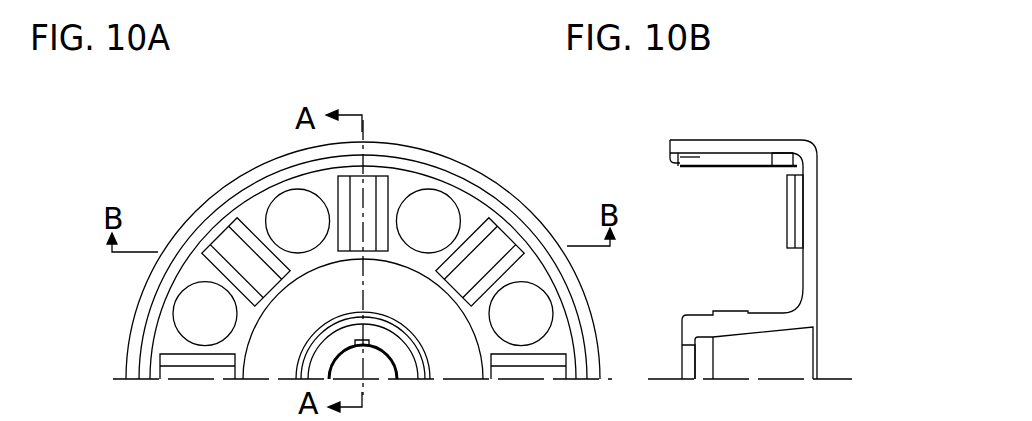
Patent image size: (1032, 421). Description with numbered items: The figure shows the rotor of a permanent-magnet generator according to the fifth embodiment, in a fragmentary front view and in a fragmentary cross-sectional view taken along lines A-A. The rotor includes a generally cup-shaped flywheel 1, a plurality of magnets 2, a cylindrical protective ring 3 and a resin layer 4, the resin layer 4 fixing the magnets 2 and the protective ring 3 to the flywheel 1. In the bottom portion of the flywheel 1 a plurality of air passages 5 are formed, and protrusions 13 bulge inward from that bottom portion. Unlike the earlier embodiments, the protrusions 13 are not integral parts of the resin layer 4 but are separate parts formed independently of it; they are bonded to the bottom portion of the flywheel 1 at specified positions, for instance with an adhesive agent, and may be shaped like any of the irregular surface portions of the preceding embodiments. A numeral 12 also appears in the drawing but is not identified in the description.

In FIG. 10A, the flywheel 1 is at (192, 227).
In FIG. 10B, the flywheel 1 is at (810, 157).
In FIG. 10B, the magnets 2 is at (742, 160).
In FIG. 10A, the protective ring 3 is at (260, 188).
In FIG. 10B, the protective ring 3 is at (705, 157).
In FIG. 10A, the resin layer 4 is at (228, 207).
In FIG. 10B, the resin layer 4 is at (785, 160).
In FIG. 10A, the air passages 5 is at (437, 220).
In FIG. 10A, the rotor 12 is at (384, 366).
In FIG. 10A, the protrusions 13 is at (370, 218).
In FIG. 10B, the protrusions 13 is at (798, 215).